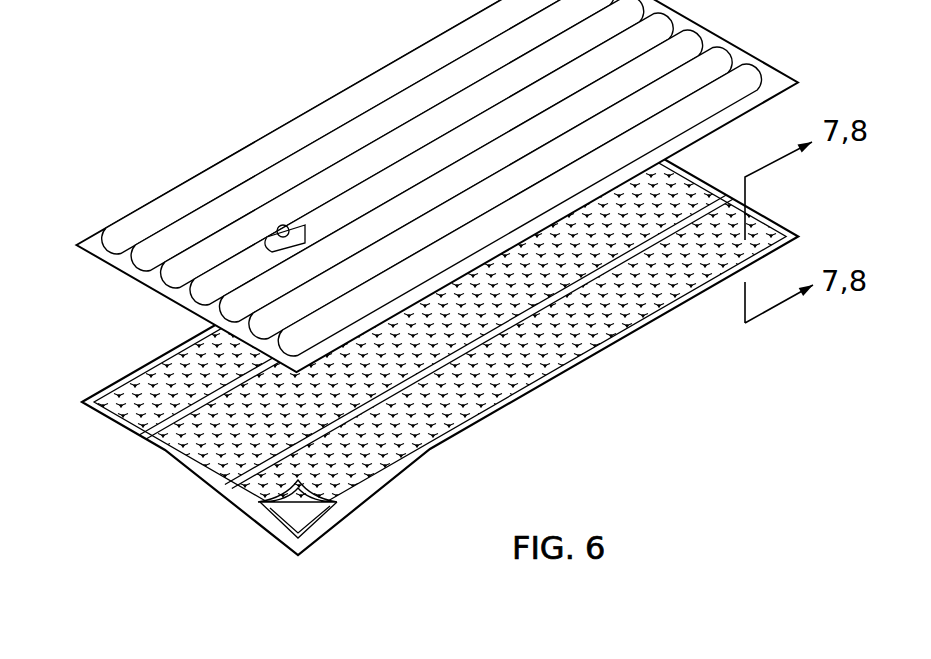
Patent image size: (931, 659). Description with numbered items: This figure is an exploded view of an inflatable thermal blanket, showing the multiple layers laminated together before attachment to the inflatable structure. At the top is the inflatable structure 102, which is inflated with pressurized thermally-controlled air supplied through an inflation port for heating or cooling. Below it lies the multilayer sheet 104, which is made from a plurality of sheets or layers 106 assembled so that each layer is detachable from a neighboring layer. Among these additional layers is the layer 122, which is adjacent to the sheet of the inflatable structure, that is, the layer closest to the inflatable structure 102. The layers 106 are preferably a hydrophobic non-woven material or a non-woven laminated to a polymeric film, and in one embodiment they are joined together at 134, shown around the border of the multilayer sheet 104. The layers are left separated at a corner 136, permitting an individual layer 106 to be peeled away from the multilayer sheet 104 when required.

The inflatable structure 102 is at (308, 83).
The multilayer sheet 104 is at (420, 345).
The layers 106 is at (320, 537).
The layer 122 is at (280, 500).
The joint 134 is at (147, 362).
The corner 136 is at (260, 532).